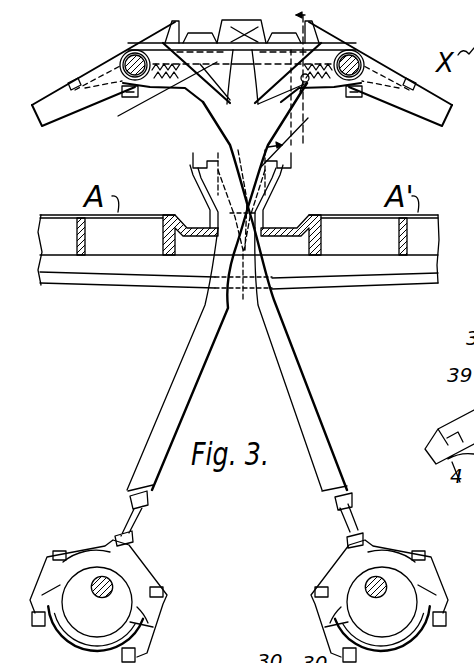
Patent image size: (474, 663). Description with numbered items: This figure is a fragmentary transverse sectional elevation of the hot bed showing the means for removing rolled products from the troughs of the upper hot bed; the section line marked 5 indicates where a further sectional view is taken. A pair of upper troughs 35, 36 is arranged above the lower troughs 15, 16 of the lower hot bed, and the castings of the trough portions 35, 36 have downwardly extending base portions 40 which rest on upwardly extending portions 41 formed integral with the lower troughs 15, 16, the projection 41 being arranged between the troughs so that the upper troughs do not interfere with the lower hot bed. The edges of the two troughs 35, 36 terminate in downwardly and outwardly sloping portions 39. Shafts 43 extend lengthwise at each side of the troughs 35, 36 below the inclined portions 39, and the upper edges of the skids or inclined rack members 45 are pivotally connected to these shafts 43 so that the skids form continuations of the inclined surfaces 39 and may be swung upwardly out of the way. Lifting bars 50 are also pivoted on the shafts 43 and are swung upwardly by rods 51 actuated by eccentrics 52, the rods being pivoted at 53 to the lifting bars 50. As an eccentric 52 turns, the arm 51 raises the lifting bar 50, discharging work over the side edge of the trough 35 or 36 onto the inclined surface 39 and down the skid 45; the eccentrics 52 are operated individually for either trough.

The trough 35 is at (224, 27).
The trough 36 is at (242, 84).
The downwardly and outwardly sloping portion 39 is at (152, 35).
The downwardly extending base portion 40 is at (335, 109).
The upwardly extending portion 41 is at (290, 160).
The shaft 43 is at (122, 62).
The skid or inclined rack member 45 is at (58, 124).
The lifting bar 50 is at (230, 72).
The rod 51 is at (270, 352).
The eccentric 52 is at (239, 601).
The pivot 53 is at (111, 107).
The trough 15 is at (211, 222).
The trough 16 is at (300, 222).
The section line 5 is at (284, 88).